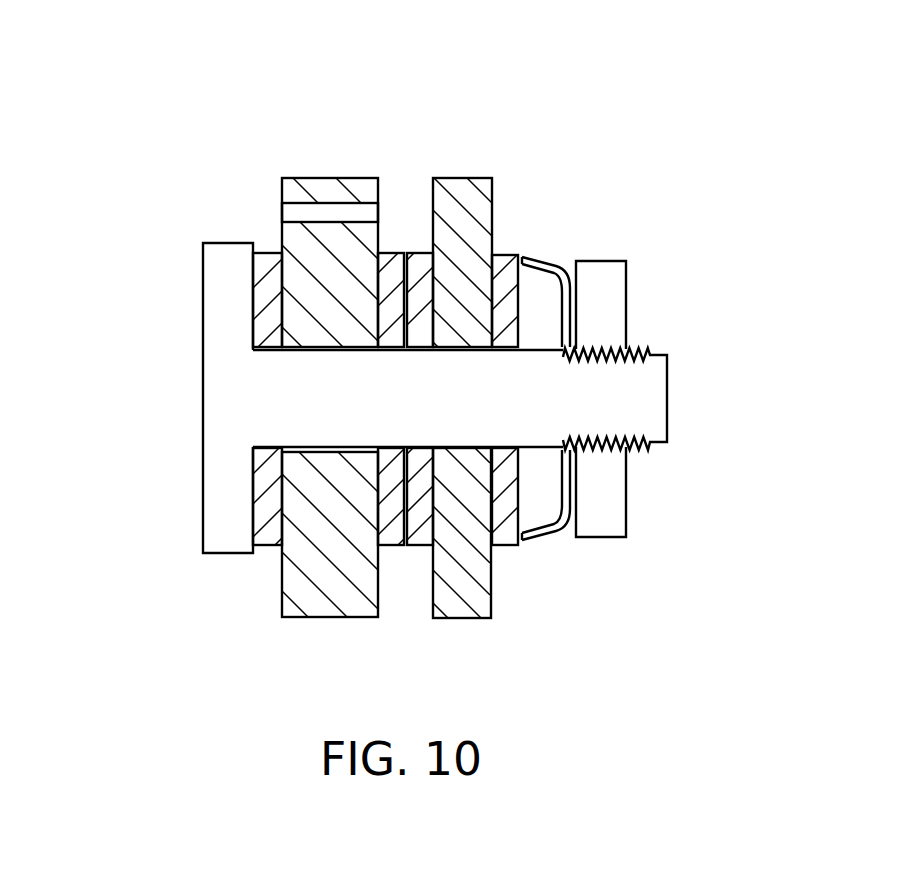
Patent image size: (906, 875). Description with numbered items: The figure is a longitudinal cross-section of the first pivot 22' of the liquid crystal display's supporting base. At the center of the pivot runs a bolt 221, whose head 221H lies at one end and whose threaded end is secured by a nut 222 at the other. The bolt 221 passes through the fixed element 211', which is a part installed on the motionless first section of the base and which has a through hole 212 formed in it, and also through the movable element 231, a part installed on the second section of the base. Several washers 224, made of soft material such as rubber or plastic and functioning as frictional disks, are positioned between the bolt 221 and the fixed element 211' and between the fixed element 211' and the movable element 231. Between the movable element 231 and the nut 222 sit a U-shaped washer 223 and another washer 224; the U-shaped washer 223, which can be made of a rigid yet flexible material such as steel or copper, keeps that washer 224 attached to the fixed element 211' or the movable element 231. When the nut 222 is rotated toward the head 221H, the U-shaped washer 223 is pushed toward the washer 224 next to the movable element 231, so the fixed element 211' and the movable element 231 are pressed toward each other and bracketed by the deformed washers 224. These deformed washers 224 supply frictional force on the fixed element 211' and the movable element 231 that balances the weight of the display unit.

The first pivot 22' is at (424, 378).
The fixed element 211' is at (330, 344).
The through hole 212 is at (290, 215).
The movable element 231 is at (460, 178).
The bolt 221 is at (424, 398).
The head 221H is at (217, 393).
The nut 222 is at (607, 528).
The U-shaped washer 223 is at (552, 533).
The washer 224 is at (258, 541).